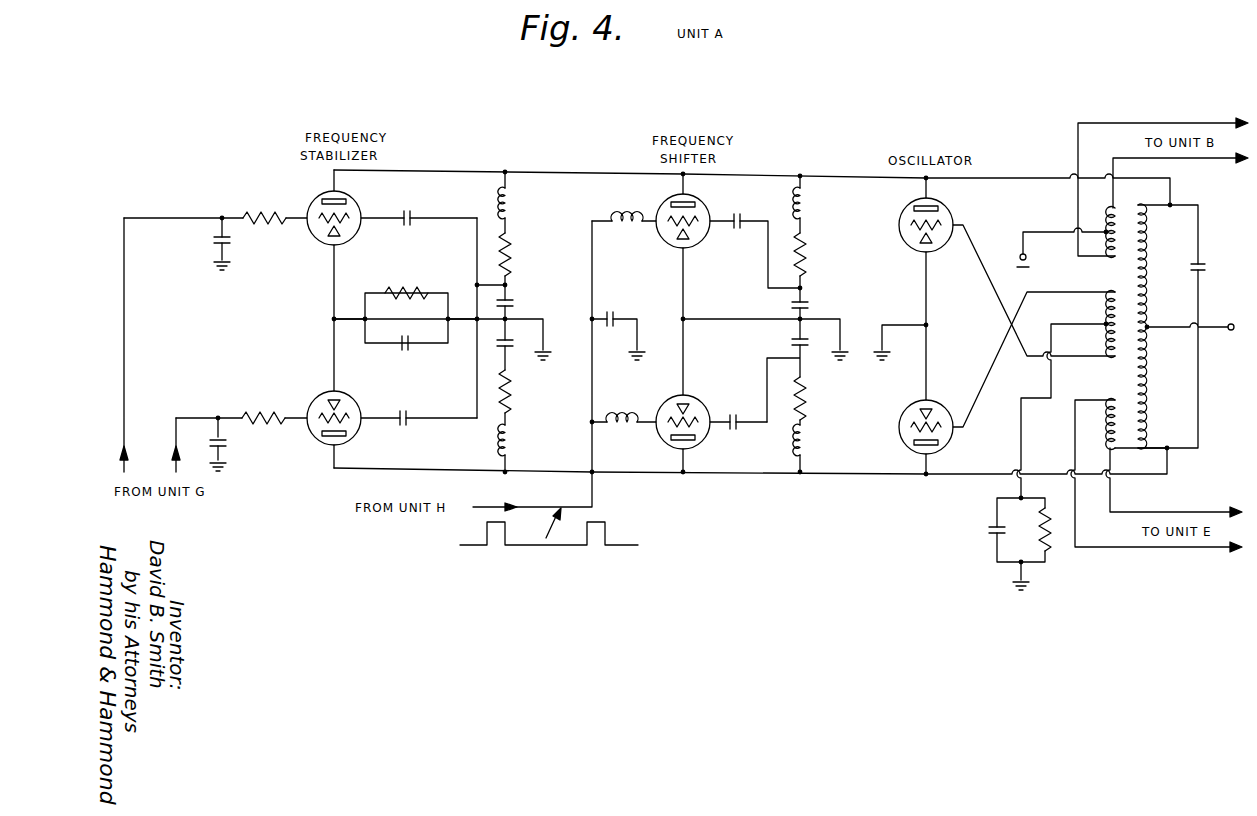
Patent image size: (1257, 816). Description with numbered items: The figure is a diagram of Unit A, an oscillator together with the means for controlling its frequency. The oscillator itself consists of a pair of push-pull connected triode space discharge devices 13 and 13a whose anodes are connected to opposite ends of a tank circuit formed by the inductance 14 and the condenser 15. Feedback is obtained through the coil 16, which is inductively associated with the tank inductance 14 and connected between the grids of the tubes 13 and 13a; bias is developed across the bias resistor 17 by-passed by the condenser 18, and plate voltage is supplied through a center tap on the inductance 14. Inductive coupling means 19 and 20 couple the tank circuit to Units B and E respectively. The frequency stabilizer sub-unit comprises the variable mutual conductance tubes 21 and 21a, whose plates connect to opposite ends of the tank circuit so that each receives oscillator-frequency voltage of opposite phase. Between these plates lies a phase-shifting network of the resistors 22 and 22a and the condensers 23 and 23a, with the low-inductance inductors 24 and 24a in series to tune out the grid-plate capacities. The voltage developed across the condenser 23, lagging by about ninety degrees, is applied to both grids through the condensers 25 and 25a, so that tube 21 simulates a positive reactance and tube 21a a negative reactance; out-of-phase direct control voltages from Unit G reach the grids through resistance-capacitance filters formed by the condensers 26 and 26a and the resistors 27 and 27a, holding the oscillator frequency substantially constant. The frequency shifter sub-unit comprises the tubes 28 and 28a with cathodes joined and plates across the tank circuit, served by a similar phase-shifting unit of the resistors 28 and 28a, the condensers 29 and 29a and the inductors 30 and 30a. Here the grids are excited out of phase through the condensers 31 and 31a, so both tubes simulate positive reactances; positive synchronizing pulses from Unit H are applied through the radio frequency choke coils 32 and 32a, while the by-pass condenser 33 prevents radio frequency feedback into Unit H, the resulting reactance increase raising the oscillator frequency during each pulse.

The triode space discharge device 13 is at (944, 212).
The triode space discharge device 13a is at (912, 409).
The tank inductance 14 is at (1148, 352).
The condenser 15 is at (1210, 266).
The feedback coil 16 is at (1106, 341).
The bias resistor 17 is at (1035, 530).
The condenser 18 is at (998, 543).
The inductive coupling means 19 is at (1117, 219).
The inductive coupling means 20 is at (1112, 450).
The variable mutual conductance space discharge device 21 is at (325, 209).
The variable mutual conductance space discharge device 21a is at (355, 396).
The resistor 22 is at (517, 266).
The resistor 22a is at (522, 397).
The condenser 23 is at (518, 316).
The condenser 23a is at (522, 349).
The inductor 24 is at (517, 202).
The inductor 24a is at (522, 448).
The condenser 25 is at (419, 208).
The condenser 25a is at (419, 428).
The condenser 26 is at (177, 243).
The condenser 26a is at (219, 443).
The resistor 27 is at (264, 228).
The resistor 27a is at (262, 410).
The variable mutual conductance space discharge device 28 is at (680, 205).
The variable mutual conductance space discharge device 28a is at (708, 402).
The condenser 29 is at (813, 316).
The condenser 29a is at (785, 376).
The inductor 30 is at (813, 204).
The inductor 30a is at (817, 448).
The condenser 31 is at (755, 251).
The condenser 31a is at (738, 436).
The radio frequency choke coil 32 is at (624, 208).
The radio frequency choke coil 32a is at (624, 409).
The by-pass condenser 33 is at (618, 325).